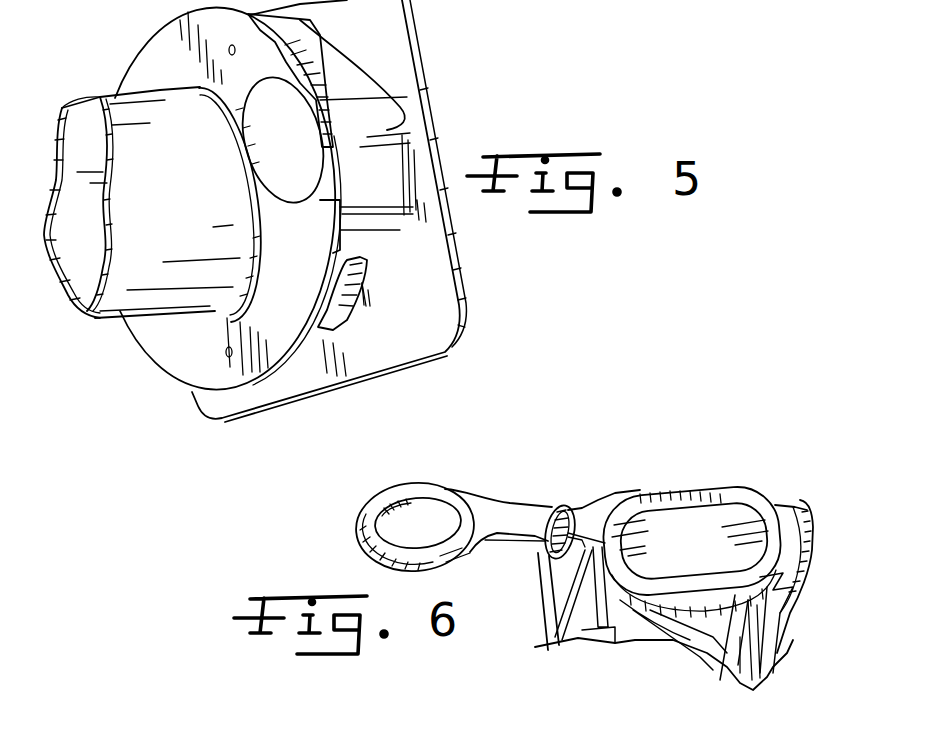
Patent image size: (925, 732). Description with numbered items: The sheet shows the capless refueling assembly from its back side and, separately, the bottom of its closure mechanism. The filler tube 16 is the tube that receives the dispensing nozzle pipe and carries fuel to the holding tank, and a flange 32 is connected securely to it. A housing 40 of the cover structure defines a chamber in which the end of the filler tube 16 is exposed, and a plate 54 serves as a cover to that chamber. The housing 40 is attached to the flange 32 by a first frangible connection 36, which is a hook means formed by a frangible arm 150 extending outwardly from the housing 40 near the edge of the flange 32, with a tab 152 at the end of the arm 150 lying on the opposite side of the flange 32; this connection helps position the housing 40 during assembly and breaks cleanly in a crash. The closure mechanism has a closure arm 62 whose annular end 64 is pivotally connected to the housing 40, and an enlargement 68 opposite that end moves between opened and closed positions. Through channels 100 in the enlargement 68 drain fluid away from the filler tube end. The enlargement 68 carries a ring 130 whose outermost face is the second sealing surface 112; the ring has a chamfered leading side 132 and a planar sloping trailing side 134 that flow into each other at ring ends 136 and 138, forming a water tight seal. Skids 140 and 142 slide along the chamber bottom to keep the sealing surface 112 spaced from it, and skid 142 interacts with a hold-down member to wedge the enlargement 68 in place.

In FIG. 5, the filler tube 16 is at (108, 90).
In FIG. 5, the flange 32 is at (185, 352).
In FIG. 5, the first frangible connection 36 is at (304, 264).
In FIG. 5, the housing 40 is at (387, 128).
In FIG. 5, the plate 54 is at (423, 330).
In FIG. 5, the frangible arm 150 is at (310, 100).
In FIG. 5, the tab 152 is at (248, 158).
In FIG. 6, the closure arm 62 is at (512, 518).
In FIG. 6, the annular end 64 is at (356, 522).
In FIG. 6, the enlargement 68 is at (800, 637).
In FIG. 6, the through channels 100 is at (697, 612).
In FIG. 6, the second sealing surface 112 is at (668, 495).
In FIG. 6, the ring 130 is at (705, 505).
In FIG. 6, the leading side 132 is at (751, 628).
In FIG. 6, the trailing side 134 is at (775, 496).
In FIG. 6, the ring end 136 is at (628, 478).
In FIG. 6, the ring end 138 is at (779, 455).
In FIG. 6, the skid 140 is at (800, 557).
In FIG. 6, the skid 142 is at (560, 508).